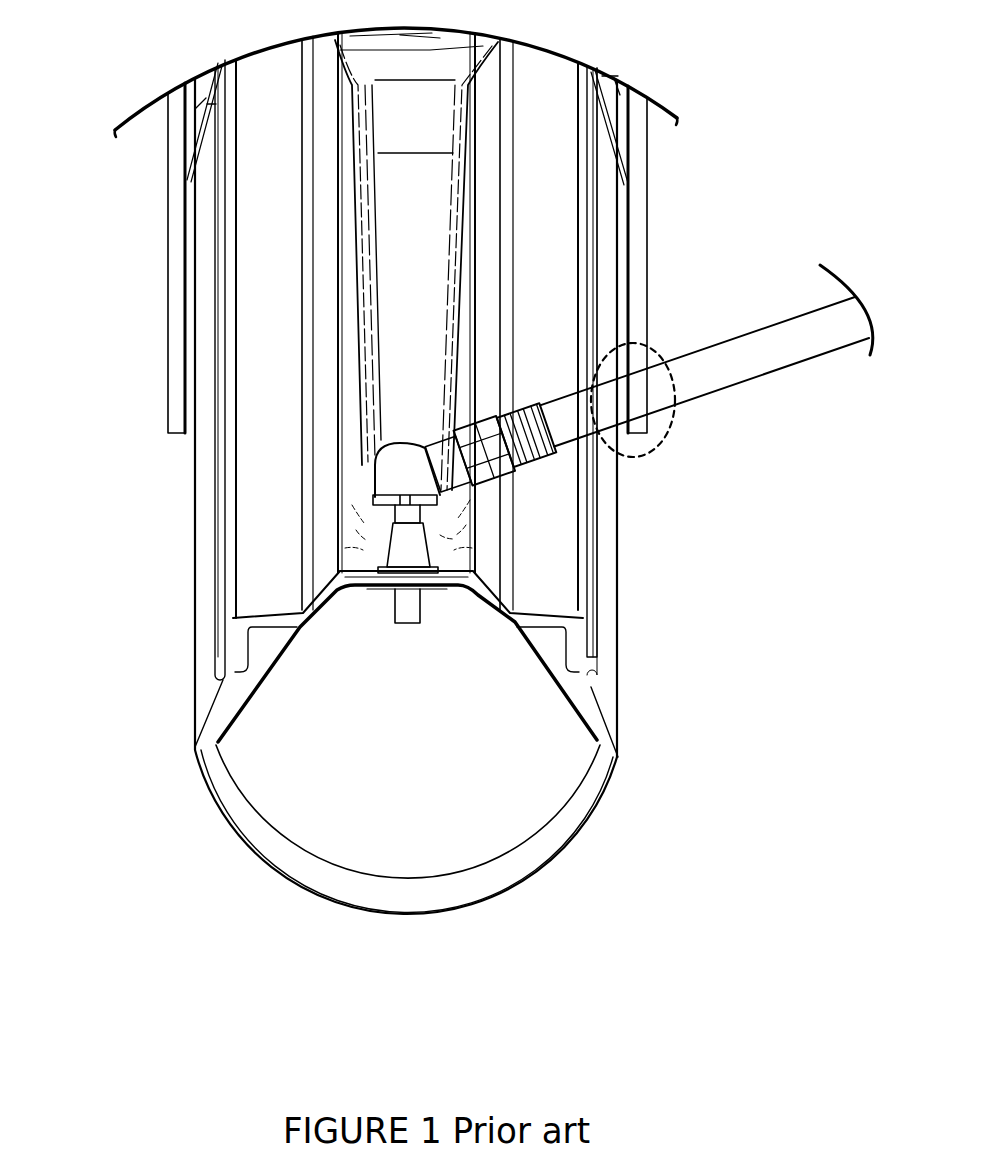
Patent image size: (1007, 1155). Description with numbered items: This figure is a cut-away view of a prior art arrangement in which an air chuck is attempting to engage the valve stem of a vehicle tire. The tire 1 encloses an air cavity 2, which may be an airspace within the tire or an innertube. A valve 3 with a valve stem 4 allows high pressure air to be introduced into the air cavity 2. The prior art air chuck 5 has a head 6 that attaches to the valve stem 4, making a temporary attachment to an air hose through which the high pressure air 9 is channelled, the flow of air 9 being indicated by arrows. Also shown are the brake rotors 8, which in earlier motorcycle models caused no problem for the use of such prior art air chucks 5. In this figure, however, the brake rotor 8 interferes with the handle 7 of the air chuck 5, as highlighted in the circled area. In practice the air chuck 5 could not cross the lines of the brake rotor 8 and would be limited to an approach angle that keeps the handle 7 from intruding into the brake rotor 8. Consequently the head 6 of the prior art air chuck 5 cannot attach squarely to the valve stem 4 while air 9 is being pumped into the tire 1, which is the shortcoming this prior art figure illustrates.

The tire 1 is at (468, 887).
The air cavity 2 is at (372, 754).
The valve 3 is at (403, 607).
The valve stem 4 is at (412, 550).
The air chuck 5 is at (381, 477).
The head 6 is at (607, 548).
The handle 7 is at (684, 387).
The brake rotor 8 is at (637, 293).
The high pressure air 9 is at (718, 366).